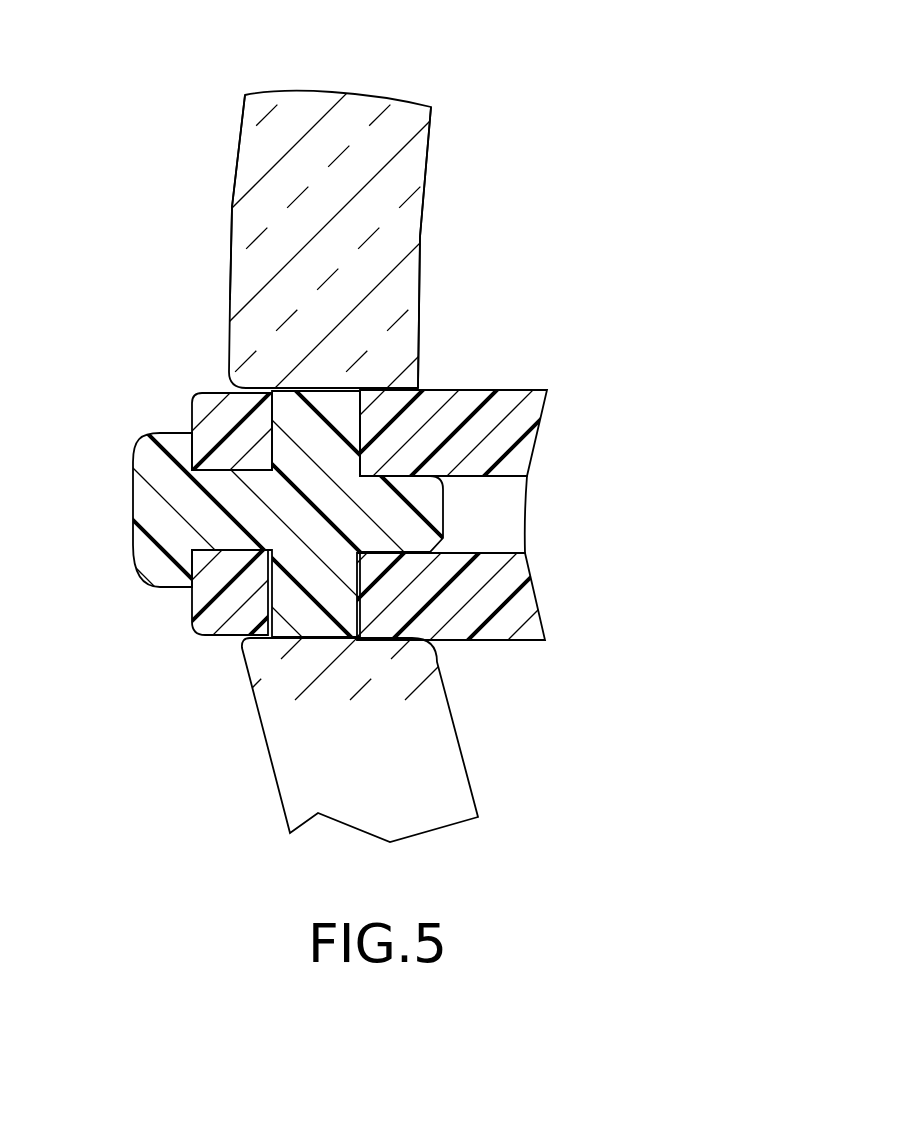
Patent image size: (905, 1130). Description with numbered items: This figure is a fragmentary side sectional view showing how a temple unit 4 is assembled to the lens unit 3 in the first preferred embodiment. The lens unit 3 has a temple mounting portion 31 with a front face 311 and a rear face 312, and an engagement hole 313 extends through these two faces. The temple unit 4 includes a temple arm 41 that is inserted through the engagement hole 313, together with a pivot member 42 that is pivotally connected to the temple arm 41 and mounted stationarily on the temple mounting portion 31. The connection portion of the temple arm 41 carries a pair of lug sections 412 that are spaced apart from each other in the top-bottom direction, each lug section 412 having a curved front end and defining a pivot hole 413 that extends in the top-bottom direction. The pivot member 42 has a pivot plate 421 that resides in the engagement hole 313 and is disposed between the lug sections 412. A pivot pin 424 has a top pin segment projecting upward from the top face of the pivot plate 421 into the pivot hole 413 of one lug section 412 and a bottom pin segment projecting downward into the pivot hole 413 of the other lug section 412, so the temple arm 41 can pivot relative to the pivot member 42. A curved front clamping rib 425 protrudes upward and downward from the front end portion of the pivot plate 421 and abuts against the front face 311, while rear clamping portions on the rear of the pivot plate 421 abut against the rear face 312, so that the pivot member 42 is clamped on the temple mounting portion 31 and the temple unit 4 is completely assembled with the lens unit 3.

The lens unit 3 is at (345, 77).
The temple mounting portion 31 is at (218, 277).
The front face 311 is at (232, 220).
The rear face 312 is at (420, 237).
The engagement hole 313 is at (368, 388).
The temple unit 4 is at (583, 606).
The temple arm 41 is at (503, 642).
The lug section 412 is at (513, 423).
The pivot hole 413 is at (362, 425).
The pivot member 42 is at (120, 525).
The pivot plate 421 is at (217, 522).
The pivot pin 424 is at (258, 425).
The front clamping rib 425 is at (152, 468).